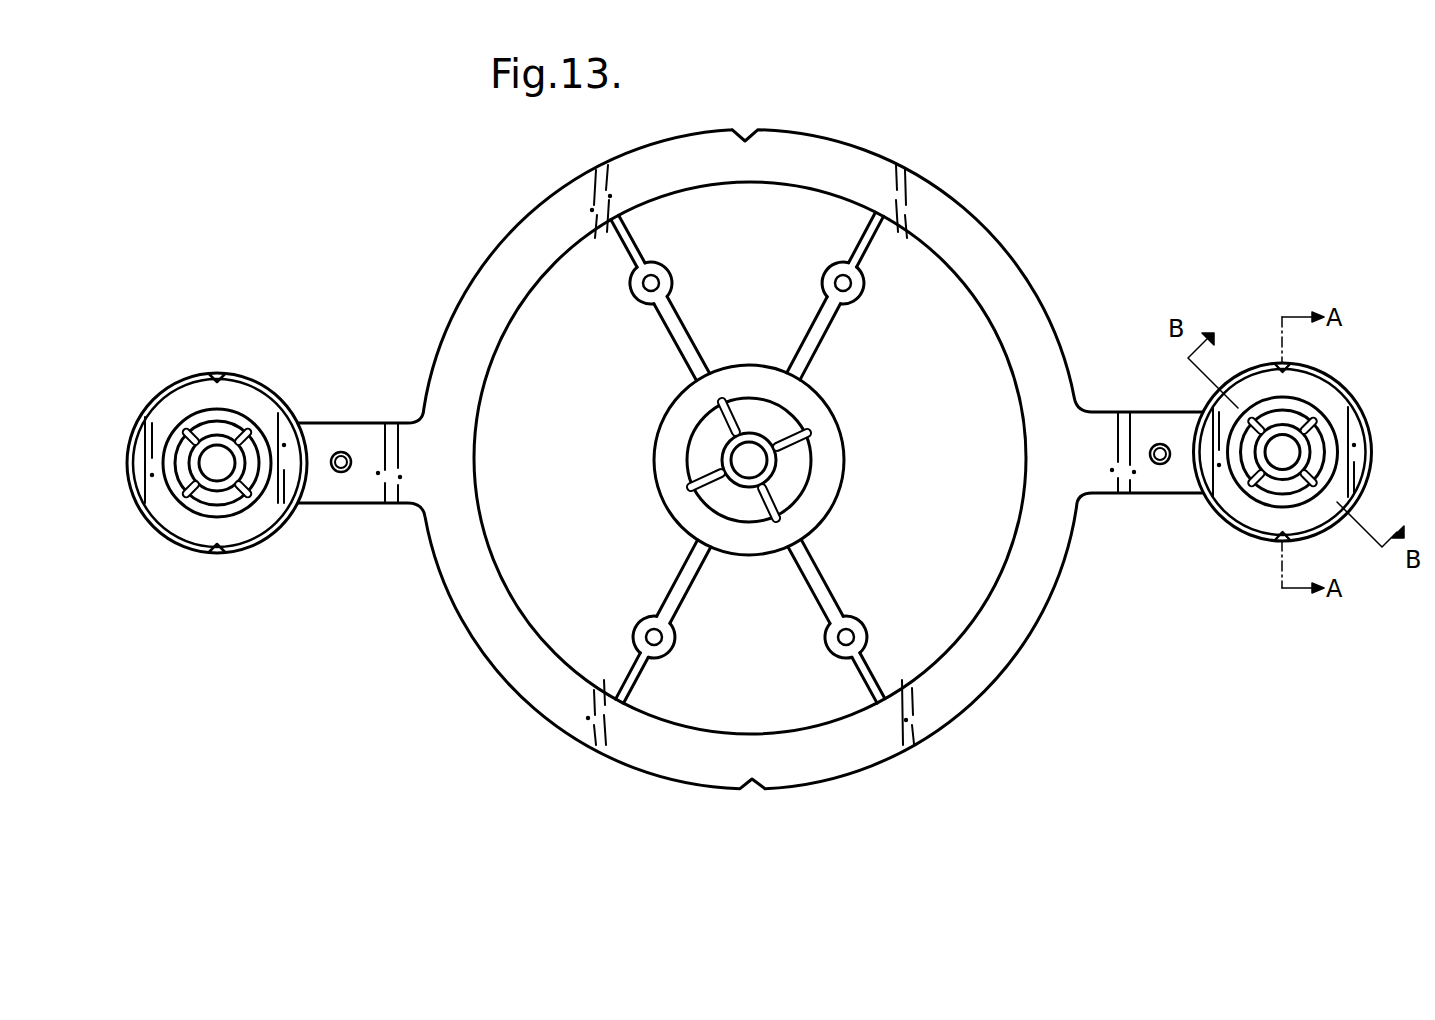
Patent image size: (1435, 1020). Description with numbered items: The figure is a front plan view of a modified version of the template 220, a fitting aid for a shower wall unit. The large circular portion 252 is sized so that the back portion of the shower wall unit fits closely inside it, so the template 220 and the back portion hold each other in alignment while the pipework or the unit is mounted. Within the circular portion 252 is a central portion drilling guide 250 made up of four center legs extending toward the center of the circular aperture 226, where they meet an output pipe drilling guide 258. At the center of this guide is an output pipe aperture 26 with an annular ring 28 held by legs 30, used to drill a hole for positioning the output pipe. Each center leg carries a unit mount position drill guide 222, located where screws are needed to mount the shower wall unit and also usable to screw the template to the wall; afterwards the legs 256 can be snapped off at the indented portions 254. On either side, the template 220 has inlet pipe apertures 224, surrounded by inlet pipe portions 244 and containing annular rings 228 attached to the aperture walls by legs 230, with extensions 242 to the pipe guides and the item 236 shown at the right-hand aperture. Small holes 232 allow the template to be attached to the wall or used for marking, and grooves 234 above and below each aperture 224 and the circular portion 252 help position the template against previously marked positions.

The template 220 is at (1003, 258).
The unit mount position drill guide 222 is at (646, 292).
The inlet pipe aperture 224 is at (200, 422).
The circular aperture 226 is at (538, 275).
The annular ring 228 is at (233, 441).
The leg 230 is at (190, 503).
The small hole 232 is at (343, 452).
The groove 234 is at (748, 128).
The right disc ring 236 is at (1253, 500).
The extension 242 is at (1242, 478).
The inlet pipe portion 244 is at (262, 518).
The central portion drilling guide 250 is at (822, 590).
The circular portion 252 is at (502, 643).
The indented portion 254 is at (880, 700).
The leg 256 is at (651, 616).
The output pipe drilling guide 258 is at (748, 378).
The output pipe aperture 26 is at (691, 432).
The annular ring 28 is at (770, 462).
The leg 30 is at (770, 497).